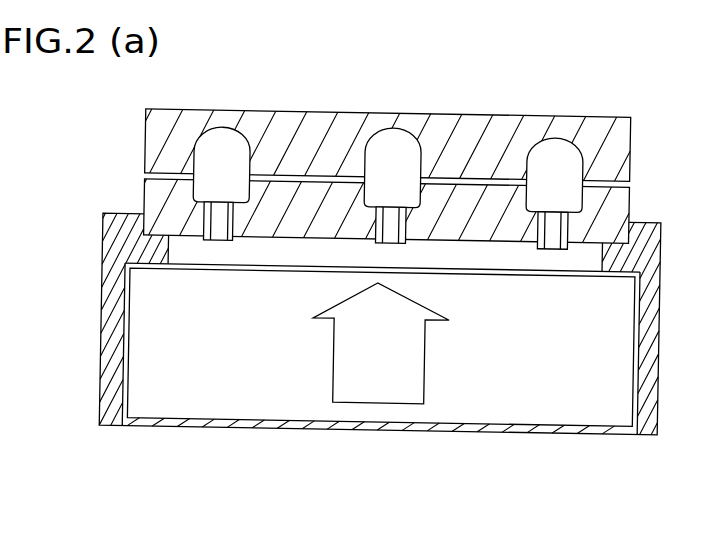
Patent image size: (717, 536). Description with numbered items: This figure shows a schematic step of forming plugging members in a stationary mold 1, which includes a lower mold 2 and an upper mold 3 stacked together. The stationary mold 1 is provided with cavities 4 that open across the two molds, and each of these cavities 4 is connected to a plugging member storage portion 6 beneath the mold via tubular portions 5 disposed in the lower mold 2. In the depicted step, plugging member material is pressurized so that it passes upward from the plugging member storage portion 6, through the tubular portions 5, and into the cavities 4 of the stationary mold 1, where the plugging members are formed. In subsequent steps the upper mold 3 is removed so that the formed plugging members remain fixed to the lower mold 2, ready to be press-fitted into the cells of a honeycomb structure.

The stationary mold 1 is at (84, 138).
The lower mold 2 is at (149, 199).
The upper mold 3 is at (148, 139).
The cavities 4 is at (225, 148).
The tubular portions 5 is at (551, 230).
The plugging member storage portion 6 is at (525, 405).